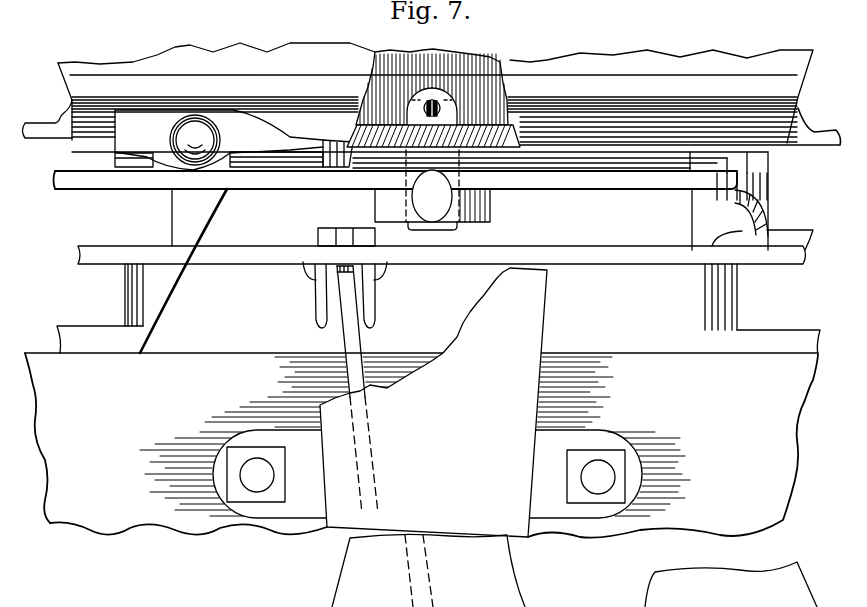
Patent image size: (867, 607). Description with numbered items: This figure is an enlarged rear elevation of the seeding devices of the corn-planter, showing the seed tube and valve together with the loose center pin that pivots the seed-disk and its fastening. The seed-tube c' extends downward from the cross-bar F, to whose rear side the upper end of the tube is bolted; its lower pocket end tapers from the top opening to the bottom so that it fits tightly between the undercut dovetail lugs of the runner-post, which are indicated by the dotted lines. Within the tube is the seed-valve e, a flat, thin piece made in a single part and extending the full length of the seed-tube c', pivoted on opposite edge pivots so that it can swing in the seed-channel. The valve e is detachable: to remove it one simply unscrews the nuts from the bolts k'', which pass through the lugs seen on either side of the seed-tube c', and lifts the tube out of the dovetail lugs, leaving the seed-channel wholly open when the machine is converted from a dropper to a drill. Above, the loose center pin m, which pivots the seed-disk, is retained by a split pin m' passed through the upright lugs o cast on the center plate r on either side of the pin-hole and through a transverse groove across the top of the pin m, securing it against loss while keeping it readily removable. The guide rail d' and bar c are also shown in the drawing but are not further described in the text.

The guide rail d' is at (432, 94).
The split pin m' is at (447, 87).
The upright lugs o is at (432, 99).
The center plate r is at (433, 134).
The loose center pin m is at (435, 197).
The cross bar c is at (438, 291).
The seed-valve e is at (356, 343).
The seed-tube c' is at (433, 402).
The bolts k'' is at (427, 474).
The cross-bar F is at (421, 445).